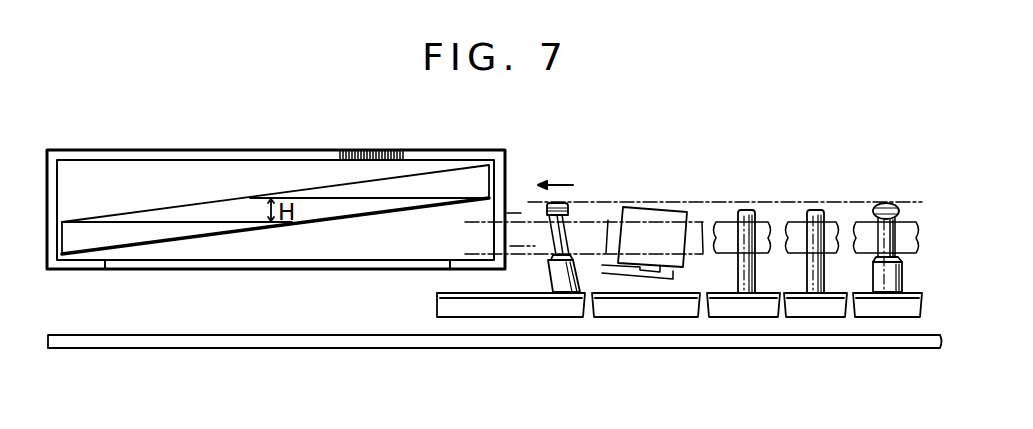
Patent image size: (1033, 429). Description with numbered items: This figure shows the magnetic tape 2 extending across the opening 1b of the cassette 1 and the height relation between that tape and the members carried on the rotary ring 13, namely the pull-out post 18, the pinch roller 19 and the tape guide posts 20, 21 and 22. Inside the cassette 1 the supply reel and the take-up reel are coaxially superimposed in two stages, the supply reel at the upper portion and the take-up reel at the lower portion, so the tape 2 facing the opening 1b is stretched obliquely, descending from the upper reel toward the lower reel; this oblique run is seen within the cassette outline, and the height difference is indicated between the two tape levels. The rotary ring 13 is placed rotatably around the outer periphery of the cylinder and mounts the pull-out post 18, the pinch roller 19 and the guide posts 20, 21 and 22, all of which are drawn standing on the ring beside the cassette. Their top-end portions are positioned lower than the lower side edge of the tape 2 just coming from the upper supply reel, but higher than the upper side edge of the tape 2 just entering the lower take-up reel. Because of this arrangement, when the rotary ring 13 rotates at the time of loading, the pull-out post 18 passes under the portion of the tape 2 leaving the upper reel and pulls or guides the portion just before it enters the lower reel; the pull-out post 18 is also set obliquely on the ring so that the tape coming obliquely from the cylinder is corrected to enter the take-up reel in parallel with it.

The cassette 1 is at (322, 153).
The opening 1b is at (167, 170).
The magnetic tape 2 is at (453, 177).
The rotary ring 13 is at (535, 312).
The pull-out post 18 is at (568, 205).
The pinch roller 19 is at (647, 215).
The tape guide post 20 is at (747, 210).
The tape guide post 21 is at (815, 210).
The tape guide post 22 is at (883, 203).